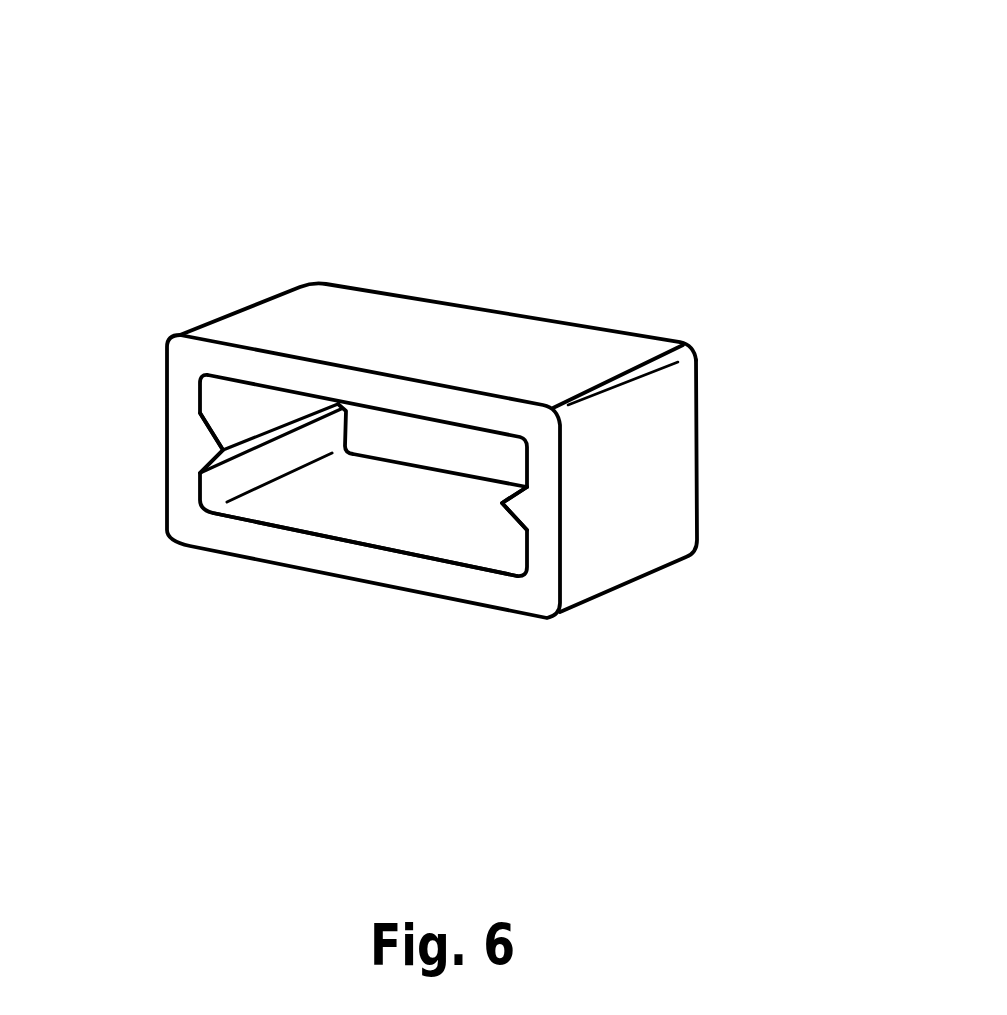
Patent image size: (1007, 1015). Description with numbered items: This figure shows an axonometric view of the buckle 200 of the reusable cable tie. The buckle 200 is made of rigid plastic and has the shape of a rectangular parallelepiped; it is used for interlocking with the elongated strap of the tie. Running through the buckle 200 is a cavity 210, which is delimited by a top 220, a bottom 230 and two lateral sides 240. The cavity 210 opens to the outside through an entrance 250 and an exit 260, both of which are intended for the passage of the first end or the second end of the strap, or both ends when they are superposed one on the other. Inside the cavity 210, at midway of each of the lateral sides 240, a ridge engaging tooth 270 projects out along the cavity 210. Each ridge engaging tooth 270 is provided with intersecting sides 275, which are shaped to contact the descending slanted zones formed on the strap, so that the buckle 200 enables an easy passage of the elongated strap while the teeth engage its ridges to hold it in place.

The buckle 200 is at (445, 370).
The cavity 210 is at (360, 505).
The top 220 is at (503, 352).
The bottom 230 is at (468, 523).
The lateral side 240 is at (627, 448).
The entrance 250 is at (255, 526).
The exit 260 is at (440, 470).
The ridge engaging tooth 270 is at (520, 506).
The intersecting sides 275 is at (245, 423).